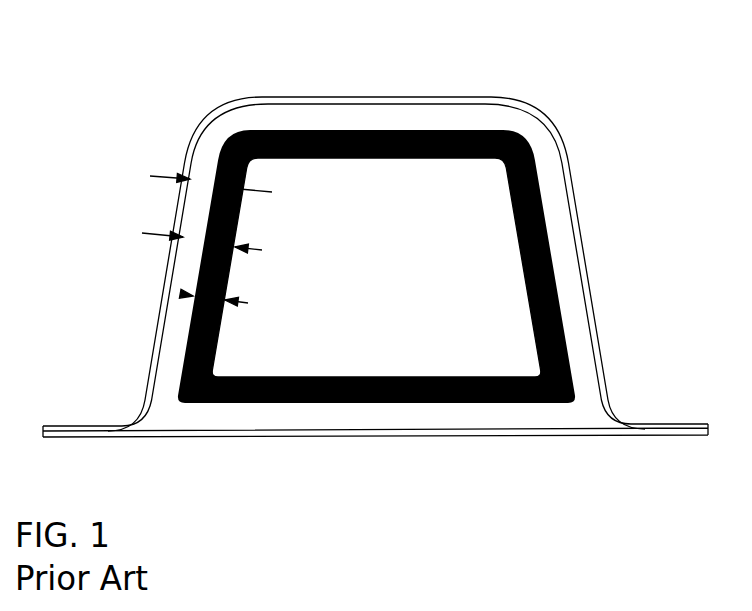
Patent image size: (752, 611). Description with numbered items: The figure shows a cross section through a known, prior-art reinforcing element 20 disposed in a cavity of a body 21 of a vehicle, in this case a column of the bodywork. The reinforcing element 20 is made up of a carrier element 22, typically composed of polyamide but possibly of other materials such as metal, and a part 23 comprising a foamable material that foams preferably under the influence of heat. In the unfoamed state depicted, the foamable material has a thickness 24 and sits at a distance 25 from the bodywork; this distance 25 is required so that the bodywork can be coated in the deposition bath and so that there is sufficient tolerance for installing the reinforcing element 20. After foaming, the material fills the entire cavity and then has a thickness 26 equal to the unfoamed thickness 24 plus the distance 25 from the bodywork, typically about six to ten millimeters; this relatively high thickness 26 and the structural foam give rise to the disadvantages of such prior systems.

The reinforcing element 20 is at (418, 430).
The body 21 is at (62, 428).
The carrier element 22 is at (470, 206).
The part comprising a foamable material 23 is at (538, 275).
The thickness 24 is at (193, 296).
The distance 25 is at (205, 186).
The thickness 26 is at (200, 242).